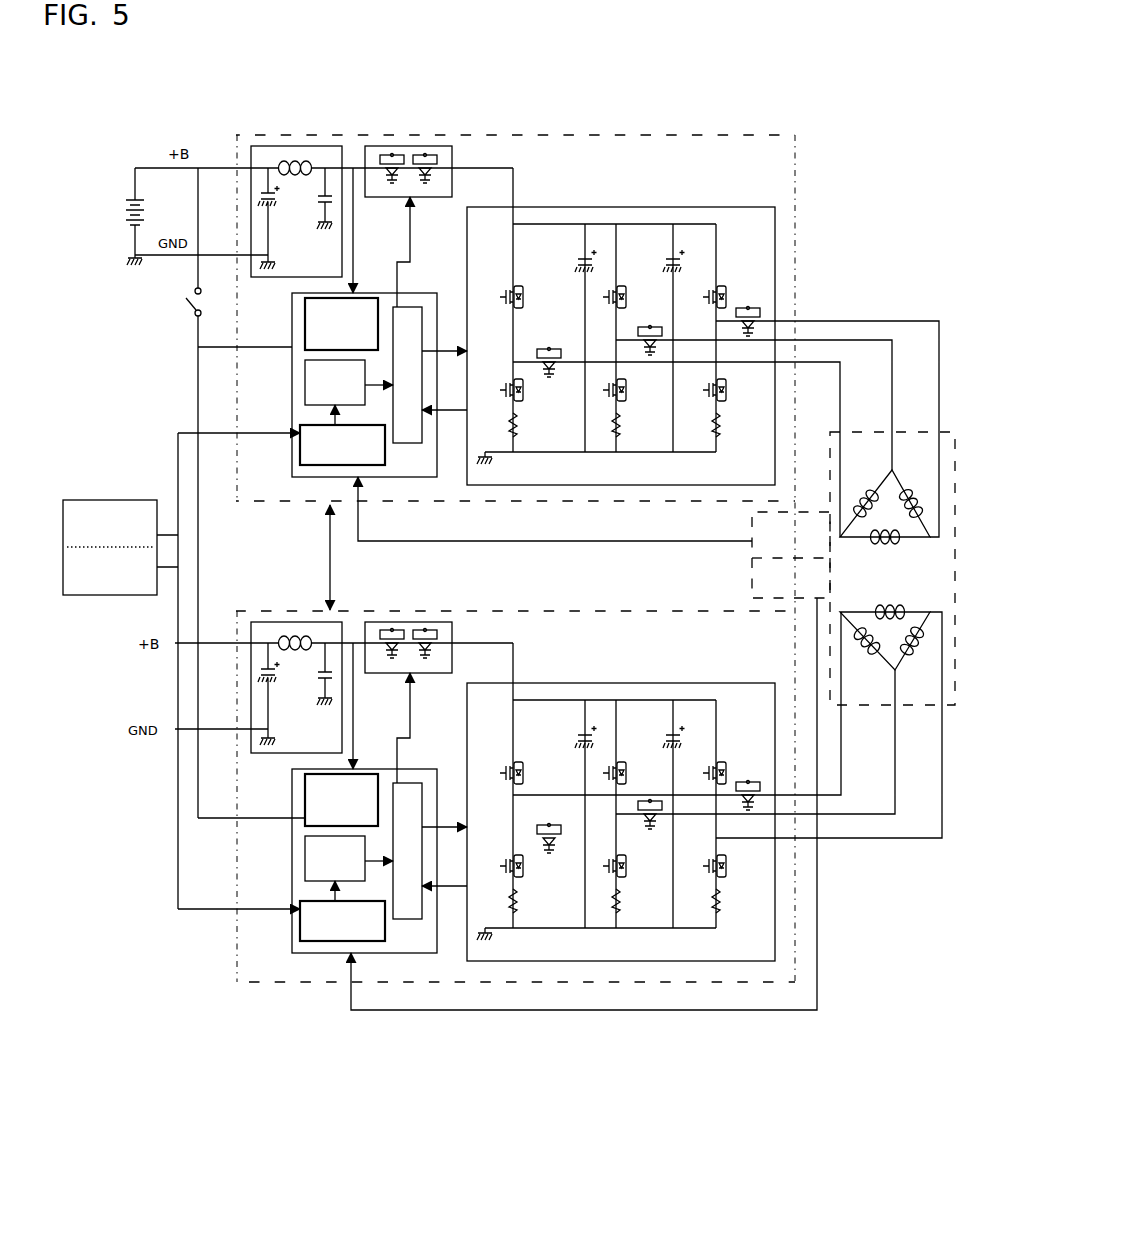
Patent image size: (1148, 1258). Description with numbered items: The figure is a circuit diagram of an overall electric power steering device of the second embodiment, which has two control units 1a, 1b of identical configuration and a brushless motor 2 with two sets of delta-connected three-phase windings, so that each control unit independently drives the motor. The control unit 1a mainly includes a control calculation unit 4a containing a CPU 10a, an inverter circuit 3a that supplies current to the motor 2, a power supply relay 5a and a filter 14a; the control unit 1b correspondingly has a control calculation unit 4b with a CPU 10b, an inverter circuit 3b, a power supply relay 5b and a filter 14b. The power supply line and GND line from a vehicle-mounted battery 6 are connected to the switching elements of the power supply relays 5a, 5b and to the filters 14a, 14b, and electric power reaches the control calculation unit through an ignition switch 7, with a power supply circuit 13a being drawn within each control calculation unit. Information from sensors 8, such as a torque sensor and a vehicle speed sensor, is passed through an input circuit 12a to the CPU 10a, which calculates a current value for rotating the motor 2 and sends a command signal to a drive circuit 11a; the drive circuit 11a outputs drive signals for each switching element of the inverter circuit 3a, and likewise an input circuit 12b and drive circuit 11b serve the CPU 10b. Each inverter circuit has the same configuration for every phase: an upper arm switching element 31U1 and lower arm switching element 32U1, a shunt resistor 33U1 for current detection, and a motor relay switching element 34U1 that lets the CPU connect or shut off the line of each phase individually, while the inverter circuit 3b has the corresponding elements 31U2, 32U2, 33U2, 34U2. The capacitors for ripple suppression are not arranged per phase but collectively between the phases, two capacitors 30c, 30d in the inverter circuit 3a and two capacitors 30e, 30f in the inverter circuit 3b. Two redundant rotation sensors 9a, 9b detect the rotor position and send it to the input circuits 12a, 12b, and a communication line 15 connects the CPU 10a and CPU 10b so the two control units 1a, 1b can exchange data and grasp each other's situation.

The control unit 1a is at (618, 134).
The control unit 1b is at (655, 983).
The three-phase motor 2 is at (908, 432).
The inverter circuit 3a is at (621, 369).
The inverter circuit 3b is at (621, 767).
The control calculation unit 4a is at (293, 426).
The control calculation unit 4b is at (292, 919).
The power supply relay 5a is at (454, 146).
The power supply relay 5b is at (454, 622).
The battery 6 is at (134, 196).
The ignition switch 7 is at (186, 303).
The sensors 8 is at (136, 597).
The rotation sensor 9a is at (752, 528).
The rotation sensor 9b is at (752, 563).
The CPU 10a is at (304, 365).
The CPU 10b is at (304, 861).
The drive circuit 11a is at (410, 444).
The drive circuit 11b is at (410, 920).
The input circuit 12a is at (300, 466).
The input circuit 12b is at (300, 926).
The power supply circuit 13a is at (302, 298).
The filter 14a is at (304, 146).
The filter 14b is at (252, 663).
The communication line 15 is at (330, 562).
The capacitor 30c is at (586, 254).
The capacitor 30d is at (674, 254).
The capacitor 30e is at (586, 730).
The capacitor 30f is at (674, 730).
The upper arm switching element 31U1 is at (521, 290).
The upper arm switching element 31U2 is at (521, 766).
The lower arm switching element 32U1 is at (521, 400).
The lower arm switching element 32U2 is at (521, 876).
The shunt resistor 33U1 is at (518, 444).
The shunt resistor 33U2 is at (518, 920).
The motor relay switching element 34U1 is at (549, 348).
The motor relay switching element 34U2 is at (549, 824).